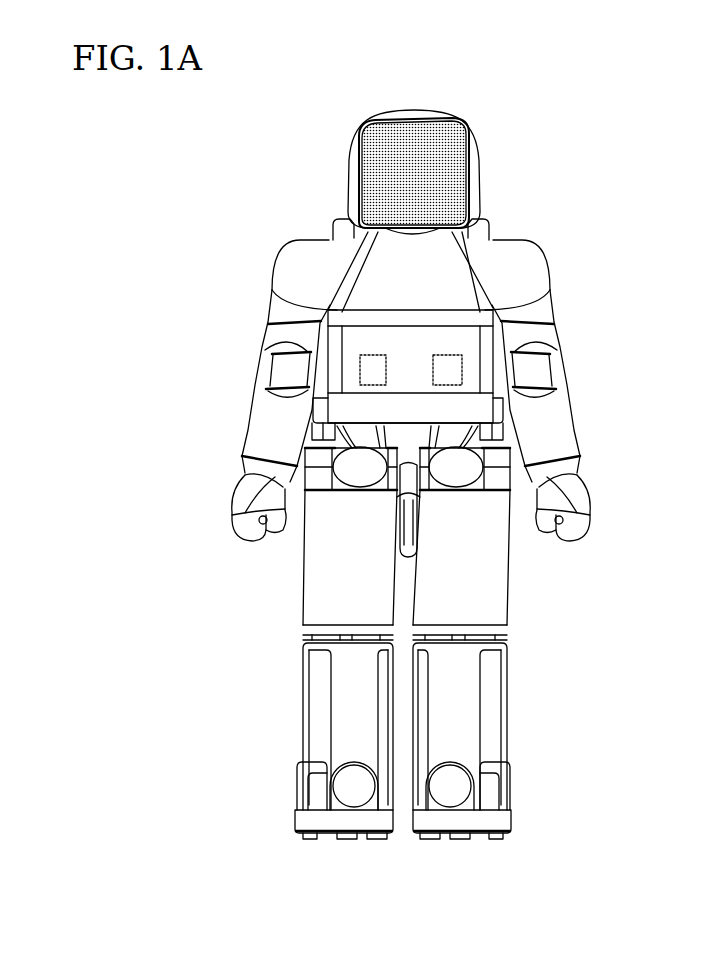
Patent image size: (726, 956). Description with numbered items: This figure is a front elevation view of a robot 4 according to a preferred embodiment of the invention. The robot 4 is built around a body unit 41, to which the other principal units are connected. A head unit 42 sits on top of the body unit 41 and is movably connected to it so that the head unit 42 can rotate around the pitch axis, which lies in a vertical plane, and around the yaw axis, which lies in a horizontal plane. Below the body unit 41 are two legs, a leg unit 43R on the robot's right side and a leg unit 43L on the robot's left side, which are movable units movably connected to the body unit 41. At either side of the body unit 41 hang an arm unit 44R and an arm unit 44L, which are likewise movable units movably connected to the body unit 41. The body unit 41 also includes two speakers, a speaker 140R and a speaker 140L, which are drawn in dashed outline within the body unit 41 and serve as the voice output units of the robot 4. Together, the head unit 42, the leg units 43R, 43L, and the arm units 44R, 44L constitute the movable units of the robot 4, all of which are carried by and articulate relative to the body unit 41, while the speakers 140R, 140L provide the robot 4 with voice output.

The robot 4 is at (519, 118).
The body unit 41 is at (448, 340).
The head unit 42 is at (412, 107).
The leg unit 43R is at (276, 697).
The leg unit 43L is at (512, 697).
The arm unit 44R is at (266, 307).
The arm unit 44L is at (556, 310).
The speaker 140R is at (372, 372).
The speaker 140L is at (446, 383).